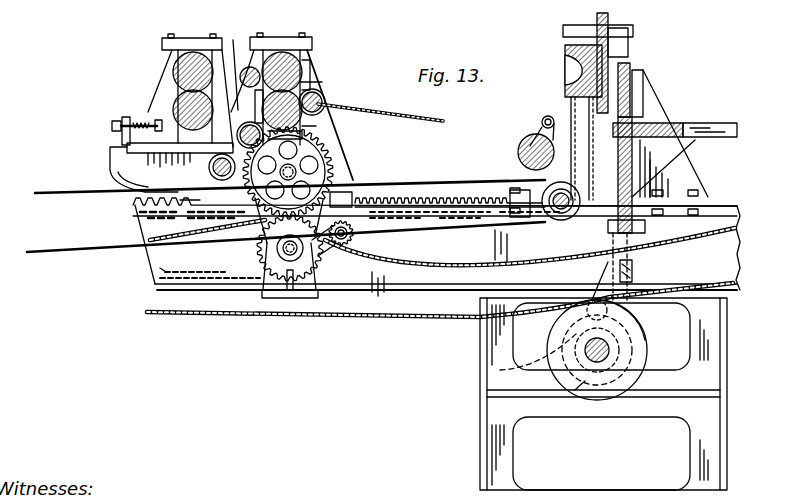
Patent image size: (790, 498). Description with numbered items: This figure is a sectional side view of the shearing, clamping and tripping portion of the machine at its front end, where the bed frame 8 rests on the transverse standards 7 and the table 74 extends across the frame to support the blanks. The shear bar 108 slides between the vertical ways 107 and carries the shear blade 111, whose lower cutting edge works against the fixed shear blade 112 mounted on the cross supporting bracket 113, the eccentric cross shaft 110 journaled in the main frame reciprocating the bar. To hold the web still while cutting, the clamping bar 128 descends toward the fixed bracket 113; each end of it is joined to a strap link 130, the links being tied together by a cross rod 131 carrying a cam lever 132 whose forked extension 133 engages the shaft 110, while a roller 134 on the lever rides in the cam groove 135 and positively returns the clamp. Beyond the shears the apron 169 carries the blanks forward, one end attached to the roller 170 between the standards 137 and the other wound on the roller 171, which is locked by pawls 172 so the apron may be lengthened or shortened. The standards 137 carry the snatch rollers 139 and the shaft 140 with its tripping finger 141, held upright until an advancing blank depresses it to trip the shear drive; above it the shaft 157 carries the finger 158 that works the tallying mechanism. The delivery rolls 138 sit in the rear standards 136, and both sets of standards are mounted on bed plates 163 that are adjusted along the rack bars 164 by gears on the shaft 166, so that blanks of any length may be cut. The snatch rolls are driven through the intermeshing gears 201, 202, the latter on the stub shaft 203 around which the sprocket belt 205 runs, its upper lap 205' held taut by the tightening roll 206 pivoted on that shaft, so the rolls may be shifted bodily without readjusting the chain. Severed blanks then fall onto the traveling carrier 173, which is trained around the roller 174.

The standards 7 is at (485, 467).
The bed frame 8 is at (163, 270).
The table 74 is at (725, 137).
The vertically extending ways 107 is at (627, 37).
The shear bar 108 is at (618, 50).
The cross shaft 110 is at (600, 360).
The shear blade 111 is at (640, 88).
The fixed shear blade 112 is at (647, 117).
The cross supporting bracket 113 is at (658, 125).
The clamping bar 128 is at (622, 63).
The strap link 130 is at (625, 240).
The cross rod 131 is at (633, 267).
The cam lever 132 is at (610, 267).
The forked extension 133 is at (500, 371).
The roller 134 is at (627, 337).
The cam groove 135 is at (577, 397).
The standards 136 is at (150, 110).
The standards 137 is at (310, 78).
The delivery rolls 138 is at (316, 126).
The snatch rollers 139 is at (311, 52).
The shaft 140 is at (305, 137).
The tripping finger 141 is at (322, 81).
The shaft 157 is at (262, 44).
The finger 158 is at (233, 45).
The bed plates 163 is at (192, 200).
The rack bars 164 is at (448, 197).
The shaft 166 is at (110, 172).
The apron 169 is at (380, 105).
The roller 170 is at (325, 98).
The roller 171 is at (568, 73).
The pawls 172 is at (541, 123).
The traveling carrier 173 is at (73, 197).
The roller 174 is at (547, 220).
The gear 201 is at (330, 160).
The gear 202 is at (265, 250).
The stub shaft 203 is at (288, 240).
The sprocket belt 205 is at (440, 320).
The upper lap 205' is at (442, 242).
The tightening roll 206 is at (356, 238).